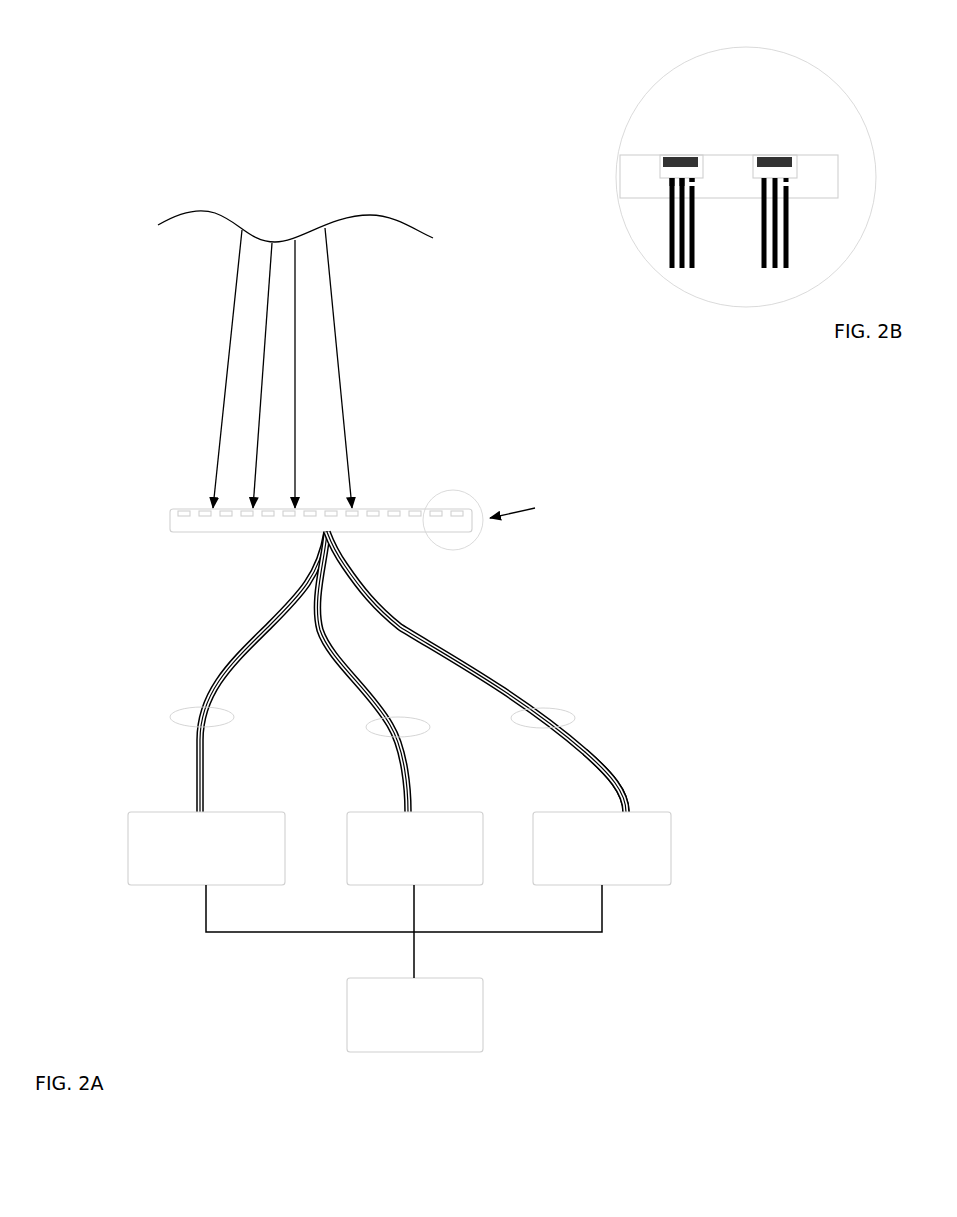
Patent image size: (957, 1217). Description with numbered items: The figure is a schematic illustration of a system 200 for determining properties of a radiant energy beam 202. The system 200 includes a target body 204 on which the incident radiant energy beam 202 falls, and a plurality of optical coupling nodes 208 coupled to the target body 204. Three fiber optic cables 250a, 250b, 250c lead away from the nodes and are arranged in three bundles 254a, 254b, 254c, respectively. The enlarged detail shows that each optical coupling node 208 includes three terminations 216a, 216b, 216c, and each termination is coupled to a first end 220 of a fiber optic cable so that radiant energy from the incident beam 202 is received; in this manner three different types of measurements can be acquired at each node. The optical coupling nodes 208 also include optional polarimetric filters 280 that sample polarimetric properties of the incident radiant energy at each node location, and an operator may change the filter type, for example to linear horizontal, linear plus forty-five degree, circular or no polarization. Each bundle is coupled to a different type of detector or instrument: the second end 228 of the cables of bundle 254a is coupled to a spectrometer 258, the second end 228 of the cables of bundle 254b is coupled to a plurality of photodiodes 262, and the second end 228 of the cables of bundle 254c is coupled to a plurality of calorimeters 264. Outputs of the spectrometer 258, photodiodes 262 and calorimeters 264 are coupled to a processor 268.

In FIG. 2A, the system 200 is at (610, 594).
In FIG. 2A, the radiant energy beam 202 is at (230, 342).
In FIG. 2A, the target body 204 is at (168, 515).
In FIG. 2A, the optical coupling nodes 208 is at (436, 508).
In FIG. 2B, the optical coupling nodes 208 is at (660, 173).
In FIG. 2B, the termination 216a is at (672, 177).
In FIG. 2B, the termination 216b is at (682, 175).
In FIG. 2B, the termination 216c is at (691, 175).
In FIG. 2A, the first end 220 is at (303, 552).
In FIG. 2A, the second end 228 is at (630, 767).
In FIG. 2A, the fiber optic cable 250a is at (222, 665).
In FIG. 2B, the fiber optic cable 250a is at (668, 242).
In FIG. 2A, the fiber optic cable 250b is at (333, 658).
In FIG. 2B, the fiber optic cable 250b is at (682, 270).
In FIG. 2A, the fiber optic cable 250c is at (412, 633).
In FIG. 2B, the fiber optic cable 250c is at (693, 267).
In FIG. 2A, the bundle 254a is at (170, 715).
In FIG. 2A, the bundle 254b is at (420, 727).
In FIG. 2A, the bundle 254c is at (577, 717).
In FIG. 2A, the spectrometer 258 is at (128, 848).
In FIG. 2A, the photodiodes 262 is at (483, 848).
In FIG. 2A, the calorimeters 264 is at (671, 848).
In FIG. 2A, the processor 268 is at (483, 1013).
In FIG. 2B, the polarimetric filters 280 is at (777, 155).